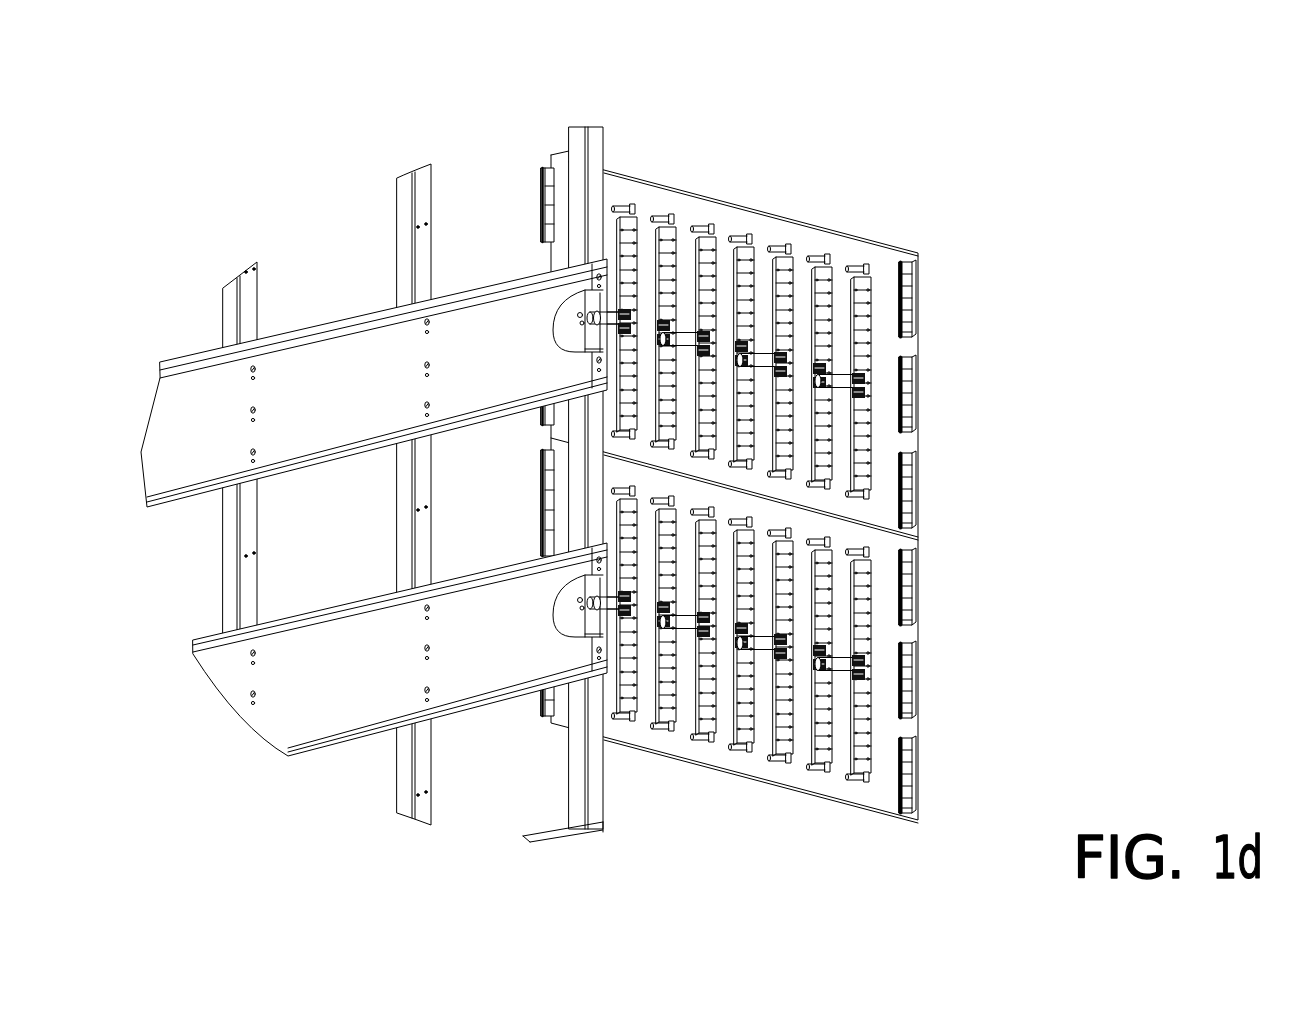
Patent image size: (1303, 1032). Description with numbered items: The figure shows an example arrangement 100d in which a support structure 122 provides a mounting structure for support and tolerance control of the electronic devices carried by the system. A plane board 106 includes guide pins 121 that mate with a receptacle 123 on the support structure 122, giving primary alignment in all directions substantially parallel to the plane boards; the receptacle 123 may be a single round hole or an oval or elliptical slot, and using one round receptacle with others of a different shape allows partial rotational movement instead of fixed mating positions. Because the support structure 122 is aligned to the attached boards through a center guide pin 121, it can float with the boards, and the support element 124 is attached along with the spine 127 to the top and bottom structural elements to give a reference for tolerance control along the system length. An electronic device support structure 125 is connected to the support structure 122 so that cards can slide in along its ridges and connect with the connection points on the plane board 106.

The electronic device support system 100d is at (145, 79).
The plane board 106 is at (743, 224).
The guide pin 121 is at (838, 376).
The support structure 122 is at (604, 149).
The receptacle 123 is at (608, 308).
The support element 124 is at (920, 382).
The electronic device support structure 125 is at (370, 358).
The spine 127 is at (569, 125).